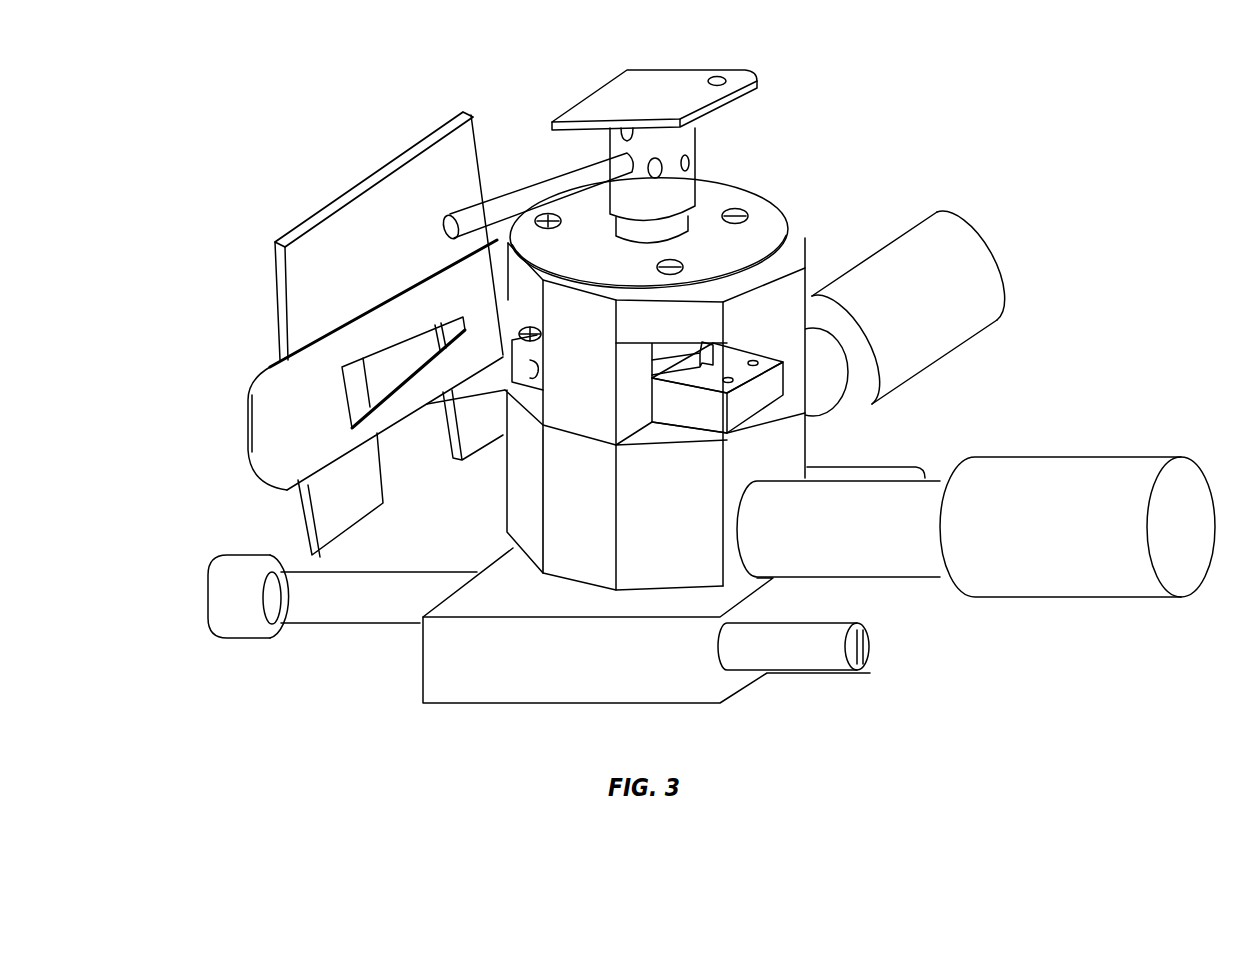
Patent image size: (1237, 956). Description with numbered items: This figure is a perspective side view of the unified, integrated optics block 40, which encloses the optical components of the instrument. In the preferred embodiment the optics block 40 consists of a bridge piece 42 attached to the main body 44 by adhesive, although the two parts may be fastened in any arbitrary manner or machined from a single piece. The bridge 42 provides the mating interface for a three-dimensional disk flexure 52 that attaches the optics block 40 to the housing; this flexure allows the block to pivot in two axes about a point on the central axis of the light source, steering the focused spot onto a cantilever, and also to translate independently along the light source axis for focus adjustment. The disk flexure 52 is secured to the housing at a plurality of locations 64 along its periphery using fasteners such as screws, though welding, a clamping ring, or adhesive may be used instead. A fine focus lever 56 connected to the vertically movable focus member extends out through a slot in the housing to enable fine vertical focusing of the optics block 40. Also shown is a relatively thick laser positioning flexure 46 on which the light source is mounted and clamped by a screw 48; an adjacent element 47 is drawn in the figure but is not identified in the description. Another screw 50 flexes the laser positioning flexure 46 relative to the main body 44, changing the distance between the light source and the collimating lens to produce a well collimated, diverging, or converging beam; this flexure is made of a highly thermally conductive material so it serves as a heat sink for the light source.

The integrated optics block 40 is at (703, 514).
The bridge piece 42 is at (593, 405).
The main body 44 is at (517, 563).
The laser positioning flexure 46 is at (766, 398).
The housing 47 is at (753, 363).
The screw 48 is at (453, 432).
The screw 50 is at (517, 330).
The disk flexure 52 is at (672, 262).
The fine focus lever 56 is at (595, 168).
The locations 64 is at (550, 214).